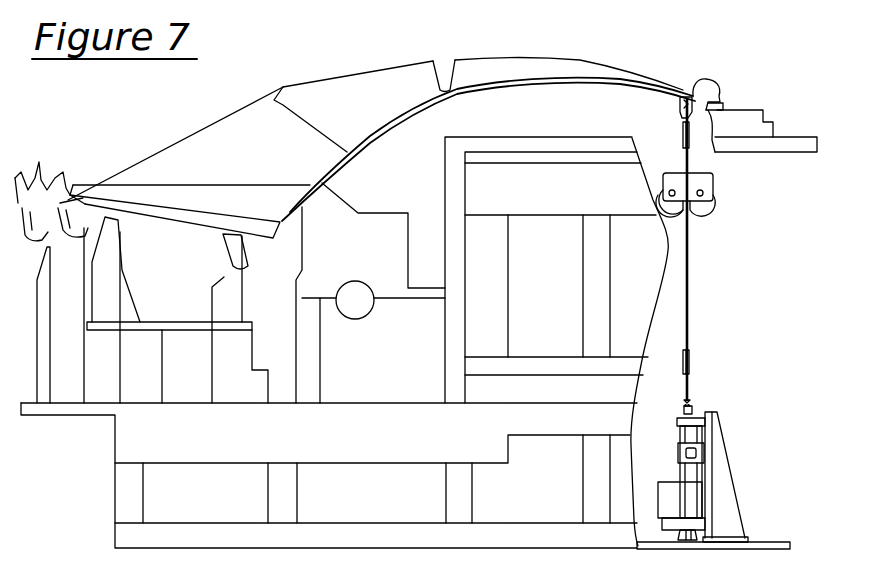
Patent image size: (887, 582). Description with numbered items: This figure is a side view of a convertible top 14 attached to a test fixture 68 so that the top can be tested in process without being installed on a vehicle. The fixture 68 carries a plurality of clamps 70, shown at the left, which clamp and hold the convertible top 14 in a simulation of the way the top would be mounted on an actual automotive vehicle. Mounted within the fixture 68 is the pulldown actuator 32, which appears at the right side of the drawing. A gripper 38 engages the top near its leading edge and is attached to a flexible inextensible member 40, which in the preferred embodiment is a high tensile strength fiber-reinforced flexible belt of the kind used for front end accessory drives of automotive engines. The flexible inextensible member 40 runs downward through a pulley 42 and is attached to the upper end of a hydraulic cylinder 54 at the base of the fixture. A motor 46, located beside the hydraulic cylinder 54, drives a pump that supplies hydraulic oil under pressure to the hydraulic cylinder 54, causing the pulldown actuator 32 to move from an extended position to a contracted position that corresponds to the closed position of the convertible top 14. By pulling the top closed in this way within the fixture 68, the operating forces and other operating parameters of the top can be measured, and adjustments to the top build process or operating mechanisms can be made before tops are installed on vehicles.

The convertible top 14 is at (360, 88).
The clamps 70 is at (39, 162).
The gripper 38 is at (683, 92).
The pulley 42 is at (663, 175).
The flexible inextensible member 40 is at (690, 259).
The fixture 68 is at (776, 276).
The pulldown actuator 32 is at (712, 414).
The hydraulic cylinder 54 is at (688, 488).
The motor 46 is at (668, 500).